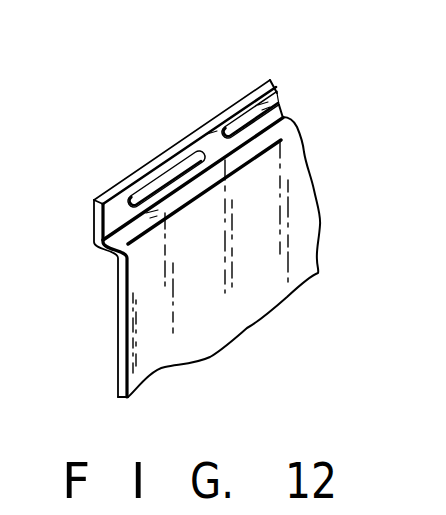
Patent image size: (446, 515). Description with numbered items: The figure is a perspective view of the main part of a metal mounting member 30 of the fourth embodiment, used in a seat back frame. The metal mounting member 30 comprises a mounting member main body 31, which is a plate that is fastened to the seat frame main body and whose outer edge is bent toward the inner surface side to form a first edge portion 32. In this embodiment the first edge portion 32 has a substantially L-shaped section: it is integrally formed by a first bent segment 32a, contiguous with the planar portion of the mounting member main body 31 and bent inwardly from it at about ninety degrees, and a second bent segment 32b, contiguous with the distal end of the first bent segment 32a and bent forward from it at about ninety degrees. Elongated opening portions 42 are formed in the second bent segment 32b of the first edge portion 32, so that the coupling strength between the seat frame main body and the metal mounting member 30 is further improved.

The metal mounting member 30 is at (108, 361).
The mounting member main body 31 is at (242, 317).
The first edge portion 32 is at (223, 127).
The first bent segment 32a is at (270, 129).
The second bent segment 32b is at (216, 119).
The opening portions 42 is at (163, 182).